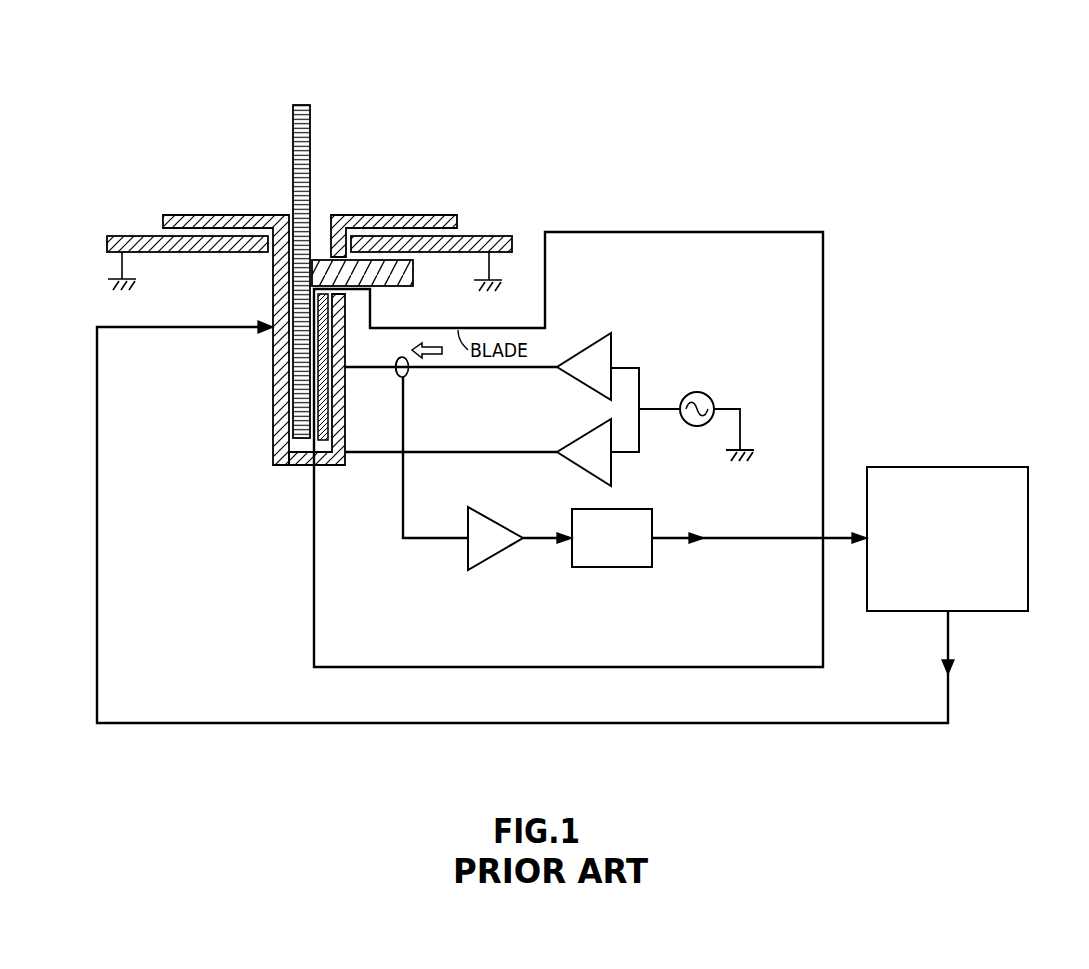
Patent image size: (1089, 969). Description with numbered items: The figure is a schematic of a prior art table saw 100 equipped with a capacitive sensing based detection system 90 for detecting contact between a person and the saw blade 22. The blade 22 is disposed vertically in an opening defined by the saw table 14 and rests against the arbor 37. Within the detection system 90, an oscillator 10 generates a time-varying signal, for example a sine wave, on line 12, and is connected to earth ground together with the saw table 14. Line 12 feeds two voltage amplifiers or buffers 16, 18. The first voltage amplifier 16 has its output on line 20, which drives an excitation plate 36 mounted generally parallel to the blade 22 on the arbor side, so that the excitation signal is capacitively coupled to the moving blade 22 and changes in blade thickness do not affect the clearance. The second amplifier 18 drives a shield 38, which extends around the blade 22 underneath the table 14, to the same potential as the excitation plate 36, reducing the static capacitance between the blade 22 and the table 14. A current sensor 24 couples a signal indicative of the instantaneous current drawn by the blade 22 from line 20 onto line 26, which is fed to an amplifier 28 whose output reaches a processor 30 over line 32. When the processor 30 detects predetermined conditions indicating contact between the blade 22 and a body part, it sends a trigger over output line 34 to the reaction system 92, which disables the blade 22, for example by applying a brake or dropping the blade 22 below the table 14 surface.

The oscillator 10 is at (712, 394).
The line 12 is at (641, 380).
The saw table 14 is at (131, 236).
The first voltage amplifier 16 is at (614, 345).
The second amplifier 18 is at (614, 470).
The line 20 is at (493, 370).
The saw blade 22 is at (300, 458).
The current sensor 24 is at (408, 372).
The line 26 is at (430, 540).
The amplifier 28 is at (497, 555).
The processor 30 is at (620, 568).
The line 32 is at (535, 542).
The output line 34 is at (726, 536).
The excitation plate 36 is at (325, 458).
The arbor 37 is at (375, 287).
The shield 38 is at (273, 410).
The detection system 90 is at (752, 231).
The reaction system 92 is at (938, 466).
The table saw 100 is at (598, 160).